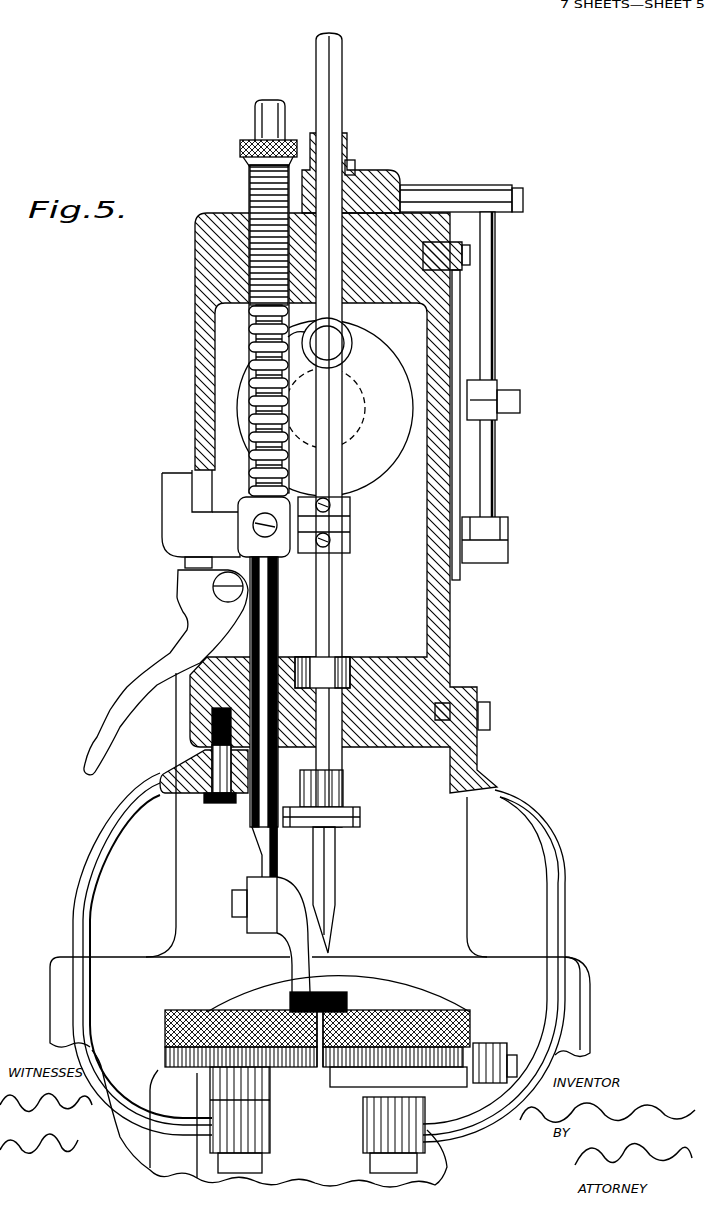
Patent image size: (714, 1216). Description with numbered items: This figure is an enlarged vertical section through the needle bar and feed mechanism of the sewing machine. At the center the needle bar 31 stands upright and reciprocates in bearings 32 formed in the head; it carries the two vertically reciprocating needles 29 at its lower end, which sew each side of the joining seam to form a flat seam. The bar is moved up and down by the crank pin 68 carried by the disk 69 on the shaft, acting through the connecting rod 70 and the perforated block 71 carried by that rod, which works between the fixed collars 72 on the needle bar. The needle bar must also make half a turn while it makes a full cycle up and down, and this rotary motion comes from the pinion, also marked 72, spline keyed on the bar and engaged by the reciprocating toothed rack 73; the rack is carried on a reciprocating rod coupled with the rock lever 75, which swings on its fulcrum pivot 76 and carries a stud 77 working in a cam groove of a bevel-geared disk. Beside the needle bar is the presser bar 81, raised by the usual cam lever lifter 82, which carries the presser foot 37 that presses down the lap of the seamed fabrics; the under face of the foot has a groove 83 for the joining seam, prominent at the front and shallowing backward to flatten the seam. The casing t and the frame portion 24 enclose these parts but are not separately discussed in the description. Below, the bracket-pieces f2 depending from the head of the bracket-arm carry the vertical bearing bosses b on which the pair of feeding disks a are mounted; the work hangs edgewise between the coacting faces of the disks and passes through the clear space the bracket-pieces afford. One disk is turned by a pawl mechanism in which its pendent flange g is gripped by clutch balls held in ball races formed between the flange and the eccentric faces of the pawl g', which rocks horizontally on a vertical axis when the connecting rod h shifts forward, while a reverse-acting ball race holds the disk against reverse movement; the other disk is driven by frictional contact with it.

The head casing t is at (202, 262).
The fixed collars 72 is at (351, 172).
The reciprocating toothed rack 73 is at (381, 178).
The rock lever 75 is at (493, 335).
The stud 77 is at (520, 402).
The fulcrum pivot 76 is at (508, 558).
The bearings 32 is at (342, 304).
The crank pin 68 is at (346, 343).
The disk 69 is at (402, 390).
The connecting rod 70 is at (340, 472).
The perforated block 71 is at (350, 523).
The presser bar 81 is at (277, 606).
The needle bar 31 is at (337, 606).
The cam lever lifter 82 is at (197, 640).
The frame 24 is at (470, 868).
The bracket-pieces f2 is at (92, 893).
The needles 29 is at (313, 876).
The groove 83 is at (328, 1005).
The presser foot 37 is at (347, 1003).
The feeding disks a is at (165, 1030).
The connecting rod h is at (505, 1053).
The vertical bearing bosses b is at (270, 1098).
The pendent flange g is at (313, 1049).
The pawl g' is at (387, 1093).